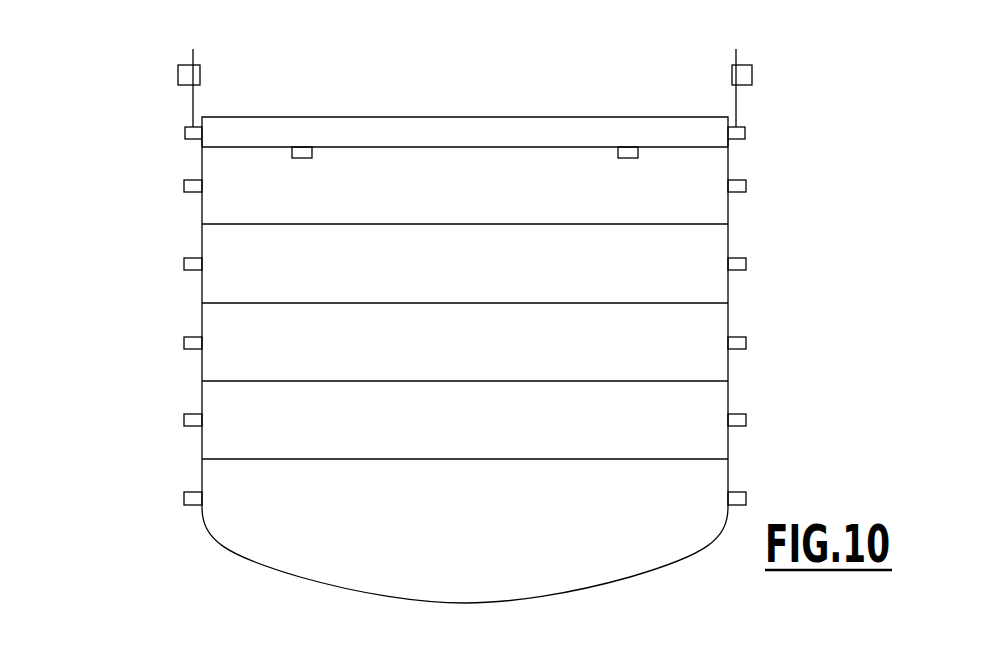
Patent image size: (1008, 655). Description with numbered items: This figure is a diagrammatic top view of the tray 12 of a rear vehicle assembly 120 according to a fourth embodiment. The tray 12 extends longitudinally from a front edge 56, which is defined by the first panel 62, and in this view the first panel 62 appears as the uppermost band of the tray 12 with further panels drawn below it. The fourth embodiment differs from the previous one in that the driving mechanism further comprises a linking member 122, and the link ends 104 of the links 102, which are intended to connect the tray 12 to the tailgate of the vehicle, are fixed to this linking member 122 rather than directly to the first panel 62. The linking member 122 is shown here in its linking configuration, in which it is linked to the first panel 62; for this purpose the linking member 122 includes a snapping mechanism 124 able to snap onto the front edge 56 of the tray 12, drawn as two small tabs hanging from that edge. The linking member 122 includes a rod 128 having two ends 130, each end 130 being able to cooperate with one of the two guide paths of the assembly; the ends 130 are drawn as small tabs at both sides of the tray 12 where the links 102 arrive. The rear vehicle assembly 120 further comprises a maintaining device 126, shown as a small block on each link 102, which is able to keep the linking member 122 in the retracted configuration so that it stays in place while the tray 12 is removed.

The tray 12 is at (792, 294).
The front edge 56 is at (450, 147).
The first panel 62 is at (232, 202).
The link 102 is at (212, 93).
The link end 104 is at (185, 127).
The rear vehicle assembly 120 is at (130, 32).
The linking member 122 is at (378, 133).
The snapping mechanism 124 is at (302, 147).
The maintaining device 126 is at (178, 72).
The rod 128 is at (543, 116).
The end 130 is at (186, 132).